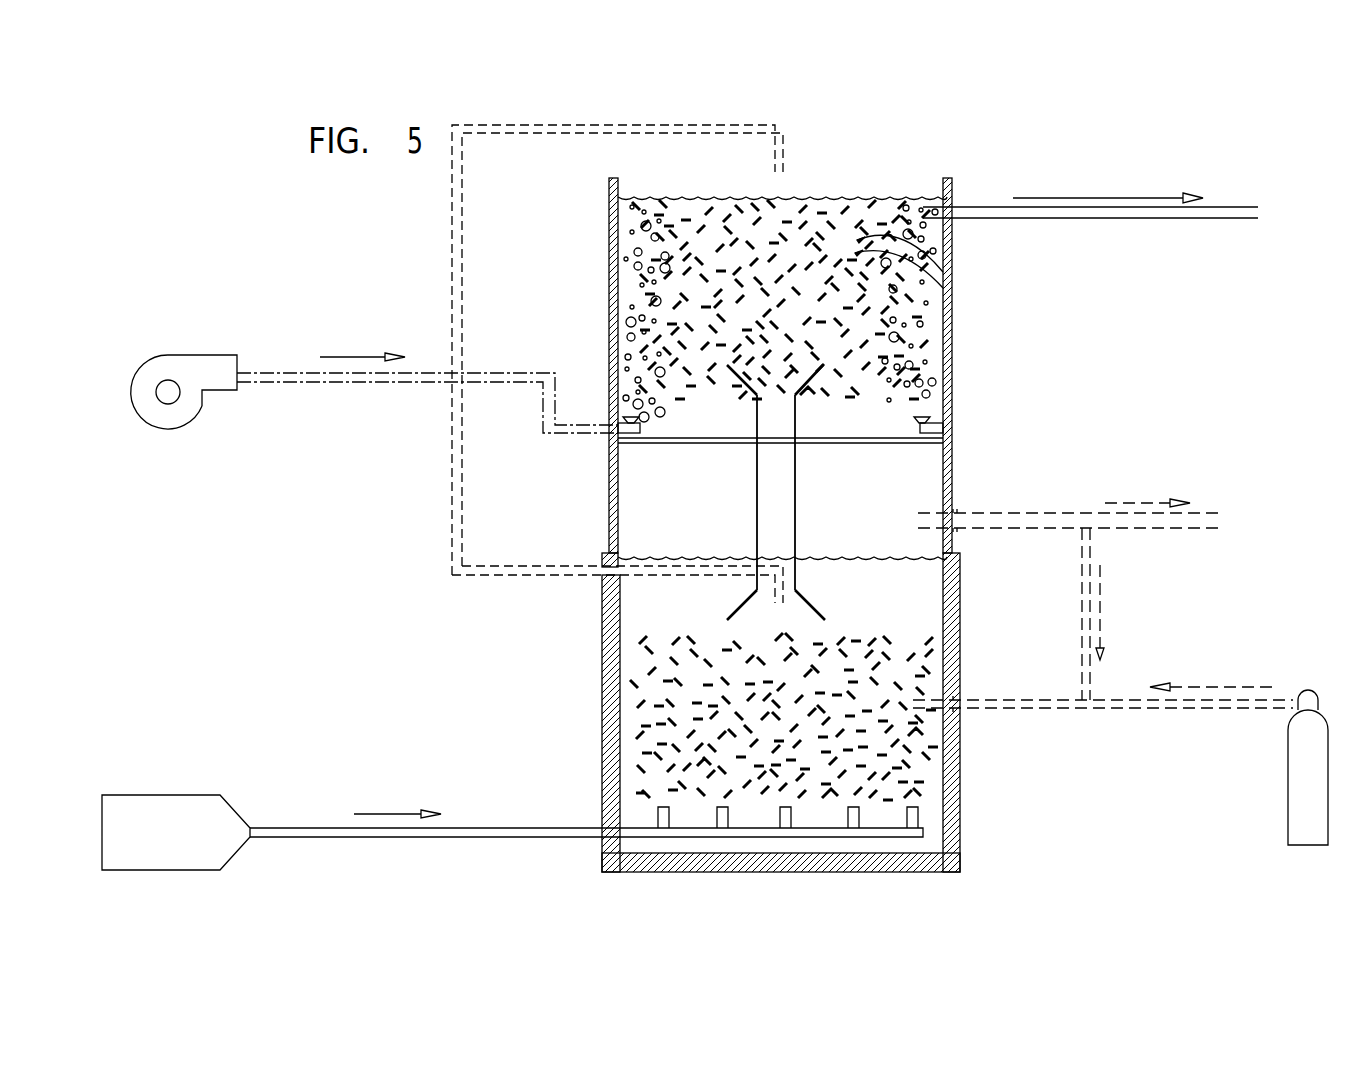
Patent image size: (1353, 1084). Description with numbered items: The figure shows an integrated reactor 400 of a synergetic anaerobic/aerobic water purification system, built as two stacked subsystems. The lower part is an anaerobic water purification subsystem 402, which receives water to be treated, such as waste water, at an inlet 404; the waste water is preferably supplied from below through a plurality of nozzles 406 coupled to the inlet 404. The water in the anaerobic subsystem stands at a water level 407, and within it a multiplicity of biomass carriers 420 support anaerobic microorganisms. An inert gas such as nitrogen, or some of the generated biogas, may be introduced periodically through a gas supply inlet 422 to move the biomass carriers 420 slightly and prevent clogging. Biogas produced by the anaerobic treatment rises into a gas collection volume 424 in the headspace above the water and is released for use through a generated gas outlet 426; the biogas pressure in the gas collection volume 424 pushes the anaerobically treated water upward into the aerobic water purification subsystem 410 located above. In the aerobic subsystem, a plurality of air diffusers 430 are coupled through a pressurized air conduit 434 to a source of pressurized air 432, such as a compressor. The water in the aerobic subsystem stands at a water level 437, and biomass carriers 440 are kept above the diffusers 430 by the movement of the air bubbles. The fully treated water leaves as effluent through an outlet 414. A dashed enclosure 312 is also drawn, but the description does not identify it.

The recirculation/control loop (dashed) 312 is at (783, 158).
The integrated reactor 400 is at (803, 525).
The anaerobic water purification subsystem 402 is at (960, 672).
The inlet 404 is at (135, 795).
The nozzles 406 is at (663, 822).
The water level 407 is at (722, 555).
The aerobic water purification subsystem 410 is at (609, 285).
The outlet 414 is at (975, 205).
The biomass carriers 420 is at (867, 697).
The gas supply inlet 422 is at (1140, 708).
The gas collection volume 424 is at (675, 473).
The generated gas outlet 426 is at (1022, 528).
The air diffusers 430 is at (640, 420).
The source of pressurized air 432 is at (196, 408).
The pressurized air conduit 434 is at (320, 382).
The water level 437 is at (720, 190).
The biomass carriers 440 is at (952, 268).